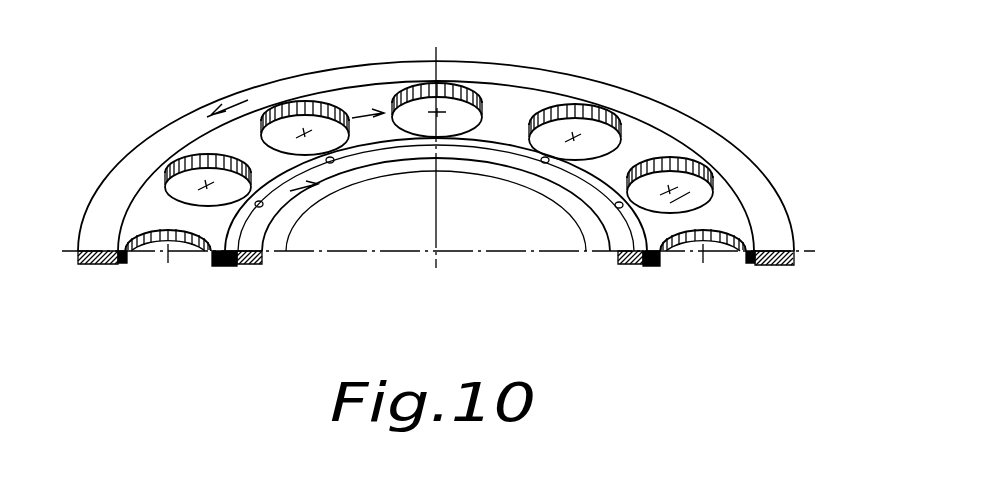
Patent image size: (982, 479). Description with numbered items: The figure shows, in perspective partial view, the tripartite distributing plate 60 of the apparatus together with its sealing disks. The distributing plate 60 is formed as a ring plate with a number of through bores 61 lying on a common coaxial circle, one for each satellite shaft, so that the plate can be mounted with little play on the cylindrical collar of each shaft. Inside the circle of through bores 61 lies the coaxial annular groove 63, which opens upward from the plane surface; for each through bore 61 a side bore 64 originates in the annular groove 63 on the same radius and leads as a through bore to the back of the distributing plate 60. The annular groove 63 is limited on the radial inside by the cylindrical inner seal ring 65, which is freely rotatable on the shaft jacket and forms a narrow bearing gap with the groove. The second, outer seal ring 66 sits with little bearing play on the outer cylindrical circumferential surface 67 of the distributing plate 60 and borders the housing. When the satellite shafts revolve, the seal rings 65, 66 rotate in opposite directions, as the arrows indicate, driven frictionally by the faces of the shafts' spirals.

The distributing plate 60 is at (723, 216).
The through bores 61 is at (686, 194).
The annular groove 63 is at (205, 250).
The side bore 64 is at (263, 206).
The inner seal ring 65 is at (248, 265).
The outer seal ring 66 is at (93, 264).
The outer cylindrical circumferential surface 67 is at (108, 265).